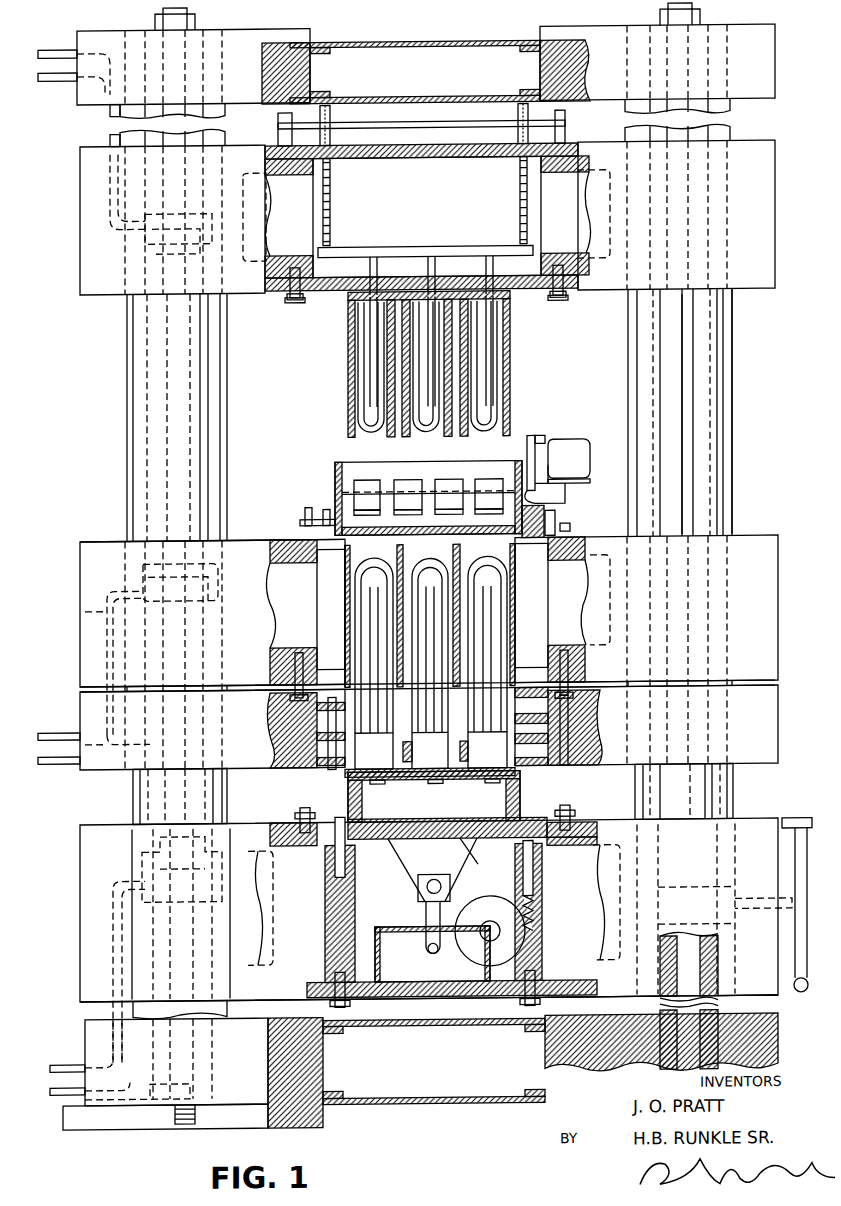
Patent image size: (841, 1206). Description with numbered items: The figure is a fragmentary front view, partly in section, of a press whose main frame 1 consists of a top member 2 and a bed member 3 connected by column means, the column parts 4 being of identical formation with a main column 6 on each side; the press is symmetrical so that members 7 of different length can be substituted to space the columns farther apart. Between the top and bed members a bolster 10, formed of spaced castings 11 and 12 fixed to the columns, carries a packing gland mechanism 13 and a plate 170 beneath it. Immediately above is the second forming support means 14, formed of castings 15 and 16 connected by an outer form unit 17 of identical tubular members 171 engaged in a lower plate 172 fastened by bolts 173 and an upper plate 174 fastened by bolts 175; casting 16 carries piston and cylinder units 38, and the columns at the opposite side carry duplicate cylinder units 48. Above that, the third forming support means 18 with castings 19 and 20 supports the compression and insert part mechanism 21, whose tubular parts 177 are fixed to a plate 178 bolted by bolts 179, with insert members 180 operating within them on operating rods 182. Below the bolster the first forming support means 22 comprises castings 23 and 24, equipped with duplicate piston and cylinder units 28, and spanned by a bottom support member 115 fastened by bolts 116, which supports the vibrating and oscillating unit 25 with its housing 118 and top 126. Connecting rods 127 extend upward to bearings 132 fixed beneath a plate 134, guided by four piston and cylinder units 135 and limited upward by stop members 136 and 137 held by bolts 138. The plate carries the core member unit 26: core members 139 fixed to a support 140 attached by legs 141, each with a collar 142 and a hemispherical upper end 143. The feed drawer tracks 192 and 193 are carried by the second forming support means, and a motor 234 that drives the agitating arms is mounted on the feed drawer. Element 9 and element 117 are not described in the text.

The main frame 1 is at (742, 384).
The top member 2 is at (535, 29).
The bed member 3 is at (152, 1132).
The column part 4 is at (135, 795).
The main column 6 is at (127, 494).
The member 7 is at (428, 97).
The lower block 9 is at (95, 1050).
The bolster 10 is at (85, 713).
The casting 11 is at (647, 770).
The casting 12 is at (95, 765).
The packing gland mechanism 13 is at (525, 707).
The second forming support means 14 is at (755, 540).
The casting 15 is at (640, 541).
The casting 16 is at (258, 542).
The outer form unit 17 is at (552, 528).
The third forming support means 18 is at (668, 300).
The casting 19 is at (765, 298).
The casting 20 is at (110, 300).
The compression and insert part mechanism 21 is at (523, 303).
The first forming support means 22 is at (85, 985).
The casting 23 is at (775, 996).
The casting 24 is at (100, 937).
The vibrating and oscillating unit 25 is at (420, 998).
The core member unit 26 is at (522, 630).
The piston and cylinder unit 28 is at (135, 920).
The piston and cylinder unit 38 is at (165, 636).
The cylinder unit 48 is at (130, 140).
The bottom support member 115 is at (470, 1000).
The bolt 116 is at (585, 1003).
The crosshead 117 is at (545, 787).
The housing 118 is at (378, 952).
The top 126 is at (400, 938).
The connecting rod 127 is at (418, 890).
The bearing 132 is at (418, 860).
The plate 134 is at (478, 846).
The piston and cylinder unit 135 is at (338, 912).
The stop member 136 is at (597, 835).
The stop member 137 is at (270, 836).
The bolt 138 is at (305, 815).
The core member 139 is at (390, 612).
The support 140 is at (478, 785).
The leg 141 is at (365, 795).
The collar 142 is at (410, 785).
The hemispherical upper end 143 is at (374, 657).
The plate 170 is at (282, 732).
The tubular member 171 is at (337, 597).
The plate 172 is at (330, 667).
The bolt 173 is at (290, 682).
The plate 174 is at (324, 553).
The bolt 175 is at (306, 525).
The tubular part 177 is at (348, 380).
The plate 178 is at (330, 300).
The bolt 179 is at (292, 300).
The insert member 180 is at (362, 415).
The operating rod 182 is at (358, 350).
The track 192 is at (538, 508).
The track 193 is at (340, 500).
The motor 234 is at (576, 444).